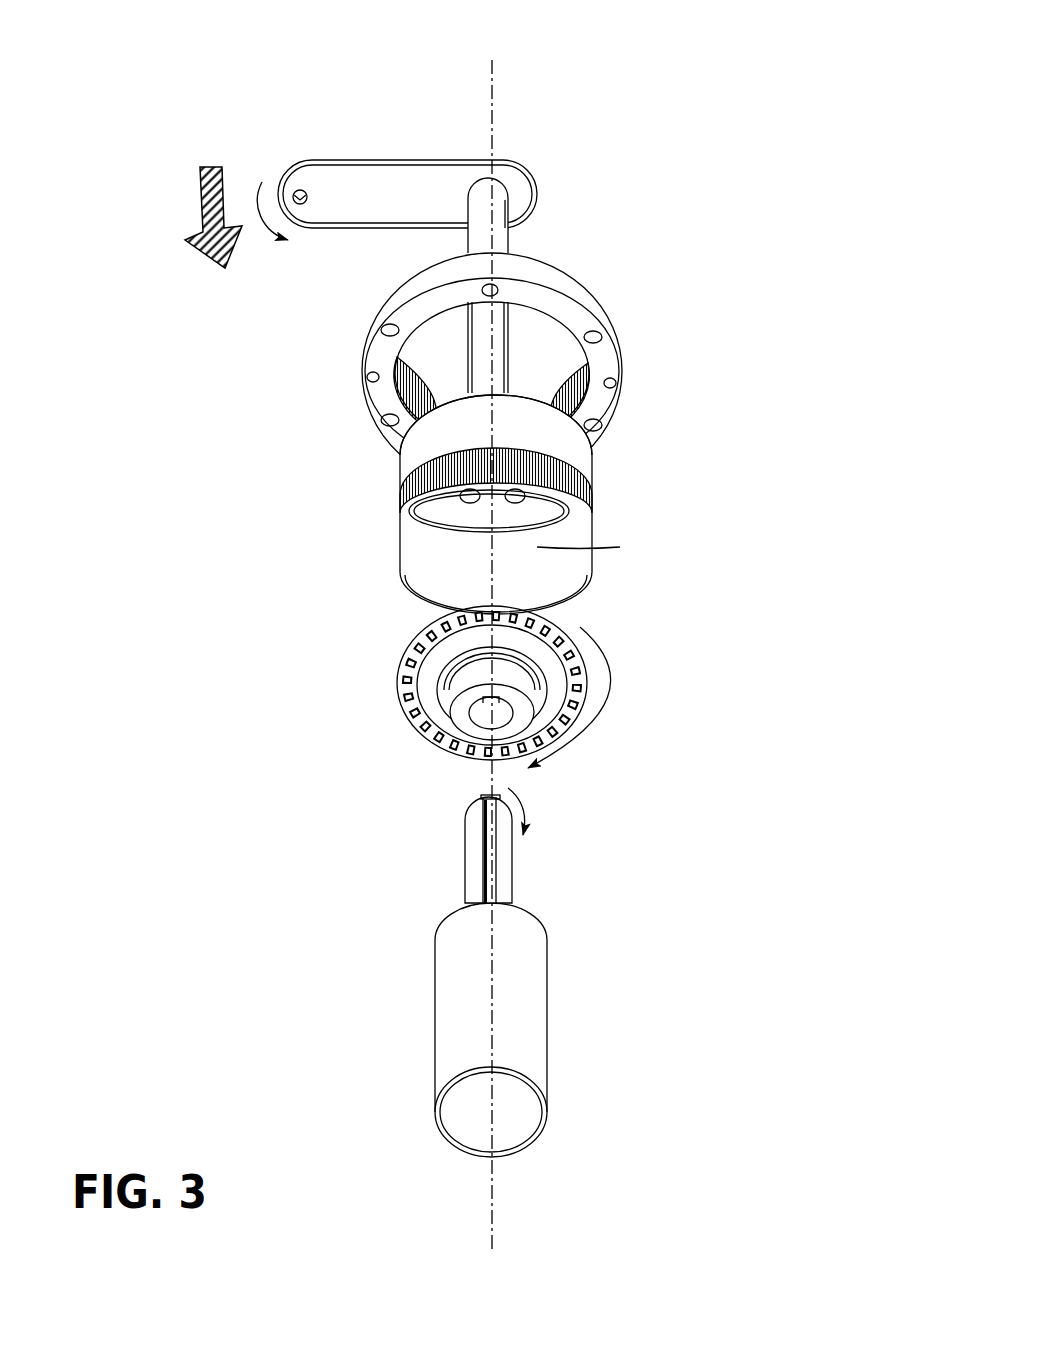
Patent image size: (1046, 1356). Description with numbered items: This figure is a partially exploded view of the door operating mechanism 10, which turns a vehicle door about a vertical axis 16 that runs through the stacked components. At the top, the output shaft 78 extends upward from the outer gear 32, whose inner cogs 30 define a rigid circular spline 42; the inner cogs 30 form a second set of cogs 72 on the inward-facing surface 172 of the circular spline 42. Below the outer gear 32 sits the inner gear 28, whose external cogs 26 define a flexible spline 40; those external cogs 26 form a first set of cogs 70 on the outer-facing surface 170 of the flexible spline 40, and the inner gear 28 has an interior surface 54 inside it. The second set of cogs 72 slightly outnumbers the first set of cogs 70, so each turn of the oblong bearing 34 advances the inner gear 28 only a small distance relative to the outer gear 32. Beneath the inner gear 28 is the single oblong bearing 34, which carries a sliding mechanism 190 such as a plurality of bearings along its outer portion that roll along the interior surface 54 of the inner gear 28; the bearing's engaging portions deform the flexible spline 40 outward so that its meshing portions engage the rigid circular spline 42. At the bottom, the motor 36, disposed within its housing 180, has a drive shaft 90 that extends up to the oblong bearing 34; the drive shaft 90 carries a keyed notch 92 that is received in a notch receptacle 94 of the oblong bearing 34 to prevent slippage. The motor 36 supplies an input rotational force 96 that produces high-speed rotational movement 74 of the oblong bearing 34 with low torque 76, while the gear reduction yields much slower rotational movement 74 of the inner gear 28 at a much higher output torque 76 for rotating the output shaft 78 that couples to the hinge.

The door operating mechanism 10 is at (740, 592).
The vertical axis 16 is at (492, 72).
The external cogs 26 is at (588, 513).
The inner gear 28 is at (384, 567).
The inner cogs 30 is at (568, 400).
The outer gear 32 is at (442, 355).
The oblong bearing 34 is at (459, 702).
The motor 36 is at (462, 1010).
The flexible spline 40 is at (448, 500).
The rigid circular spline 42 is at (413, 361).
The interior surface 54 is at (532, 546).
The first set of cogs 70 is at (568, 462).
The second set of cogs 72 is at (386, 395).
The rotational movement 74 is at (607, 693).
The torque 76 is at (197, 197).
The output shaft 78 is at (553, 201).
The drive shaft 90 is at (477, 851).
The notch 92 is at (495, 887).
The notch receptacle 94 is at (460, 690).
The input rotational force 96 is at (525, 808).
The outer-facing surface 170 is at (423, 458).
The inward-facing surface 172 is at (375, 387).
The housing 180 is at (523, 1018).
The sliding mechanism 190 is at (401, 645).